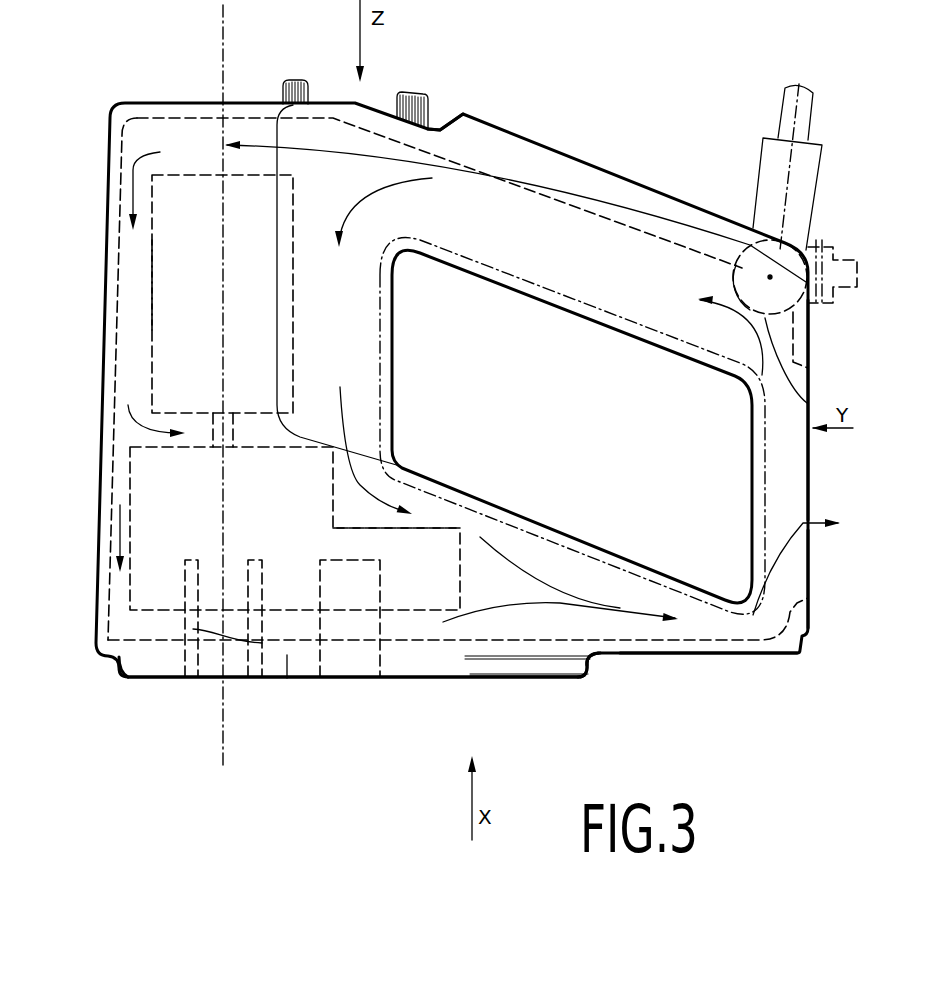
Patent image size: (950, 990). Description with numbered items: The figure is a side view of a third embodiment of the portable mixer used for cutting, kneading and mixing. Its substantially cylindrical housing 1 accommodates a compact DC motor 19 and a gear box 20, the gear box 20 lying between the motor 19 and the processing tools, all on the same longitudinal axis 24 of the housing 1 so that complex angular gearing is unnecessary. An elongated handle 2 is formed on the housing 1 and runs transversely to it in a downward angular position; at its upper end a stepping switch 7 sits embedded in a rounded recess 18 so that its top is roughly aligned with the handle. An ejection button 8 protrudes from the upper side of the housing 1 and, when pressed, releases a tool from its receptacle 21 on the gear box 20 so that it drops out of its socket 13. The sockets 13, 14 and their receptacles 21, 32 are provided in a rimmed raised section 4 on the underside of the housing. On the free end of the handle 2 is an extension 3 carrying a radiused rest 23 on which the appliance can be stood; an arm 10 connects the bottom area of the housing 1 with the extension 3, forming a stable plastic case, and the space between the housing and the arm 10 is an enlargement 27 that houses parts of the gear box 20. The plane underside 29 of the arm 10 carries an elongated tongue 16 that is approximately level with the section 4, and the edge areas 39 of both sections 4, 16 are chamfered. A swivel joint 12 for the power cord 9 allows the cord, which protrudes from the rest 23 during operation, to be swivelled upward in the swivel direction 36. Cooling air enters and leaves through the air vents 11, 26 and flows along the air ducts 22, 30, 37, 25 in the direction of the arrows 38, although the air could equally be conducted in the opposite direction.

The housing 1 is at (103, 352).
The handle 2 is at (573, 193).
The extension 3 is at (793, 458).
The raised section 4 is at (166, 680).
The stepping switch 7 is at (410, 96).
The ejection button 8 is at (298, 95).
The power cord 9 is at (828, 265).
The arm 10 is at (520, 550).
The air vent 11 is at (808, 396).
The swivel joint 12 is at (748, 250).
The socket 13 is at (192, 680).
The socket 14 is at (340, 597).
The tongue 16 is at (445, 660).
The recess 18 is at (447, 122).
The motor 19 is at (178, 258).
The gear box 20 is at (152, 562).
The receptacle 21 is at (250, 620).
The air duct 22 is at (490, 218).
The rest 23 is at (808, 363).
The longitudinal axis 24 is at (223, 43).
The air duct 25 is at (558, 620).
The air vent 26 is at (808, 553).
The enlargement 27 is at (462, 492).
The plane underside 29 is at (695, 655).
The air duct 30 is at (133, 242).
The receptacle 32 is at (320, 657).
The swivel direction 36 is at (845, 232).
The air duct 37 is at (130, 308).
The arrows 38 is at (328, 152).
The edge areas 39 is at (118, 660).